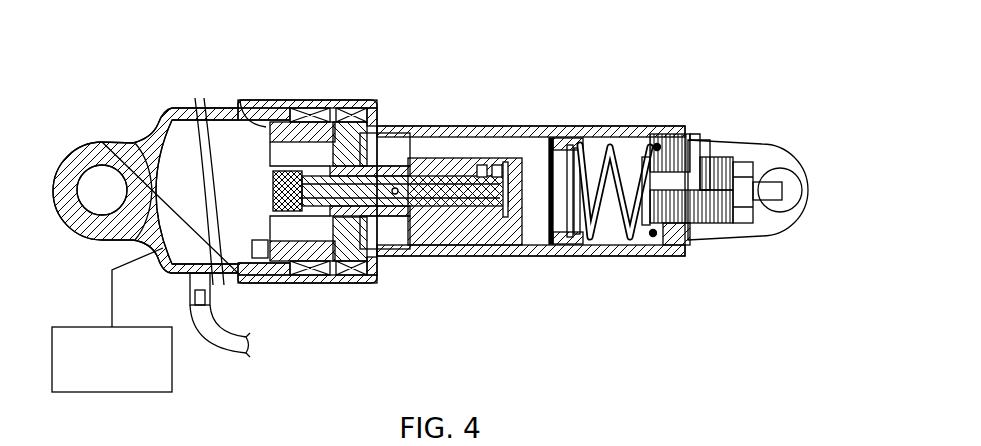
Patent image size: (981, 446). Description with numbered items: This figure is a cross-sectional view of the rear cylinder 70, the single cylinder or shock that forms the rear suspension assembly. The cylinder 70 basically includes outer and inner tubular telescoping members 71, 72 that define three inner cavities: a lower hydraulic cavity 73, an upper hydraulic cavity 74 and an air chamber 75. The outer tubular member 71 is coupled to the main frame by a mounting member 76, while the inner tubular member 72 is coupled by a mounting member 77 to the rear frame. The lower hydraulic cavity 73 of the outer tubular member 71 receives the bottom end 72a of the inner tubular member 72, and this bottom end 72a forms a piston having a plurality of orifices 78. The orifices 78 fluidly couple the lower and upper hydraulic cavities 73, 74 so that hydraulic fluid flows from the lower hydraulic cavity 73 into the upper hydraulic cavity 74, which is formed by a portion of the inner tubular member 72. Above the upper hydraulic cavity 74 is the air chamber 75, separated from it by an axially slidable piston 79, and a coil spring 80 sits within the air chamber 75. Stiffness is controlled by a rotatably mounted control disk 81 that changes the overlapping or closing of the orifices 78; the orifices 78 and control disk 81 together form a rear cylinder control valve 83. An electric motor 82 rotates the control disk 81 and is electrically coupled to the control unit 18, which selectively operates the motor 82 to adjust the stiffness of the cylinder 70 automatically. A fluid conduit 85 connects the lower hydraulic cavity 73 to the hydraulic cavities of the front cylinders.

The control unit 18 is at (107, 393).
The cylinder 70 is at (430, 222).
The outer tubular member 71 is at (280, 99).
The inner tubular member 72 is at (497, 125).
The bottom end 72a is at (246, 114).
The lower hydraulic cavity 73 is at (182, 148).
The upper hydraulic cavity 74 is at (390, 150).
The air chamber 75 is at (625, 150).
The mounting member 76 is at (87, 150).
The mounting member 77 is at (749, 141).
The orifices 78 is at (350, 128).
The piston 79 is at (557, 215).
The coil spring 80 is at (620, 233).
The control disk 81 is at (335, 156).
The electric motor 82 is at (250, 260).
The rear cylinder control valve 83 is at (299, 230).
The fluid conduit 85 is at (216, 352).